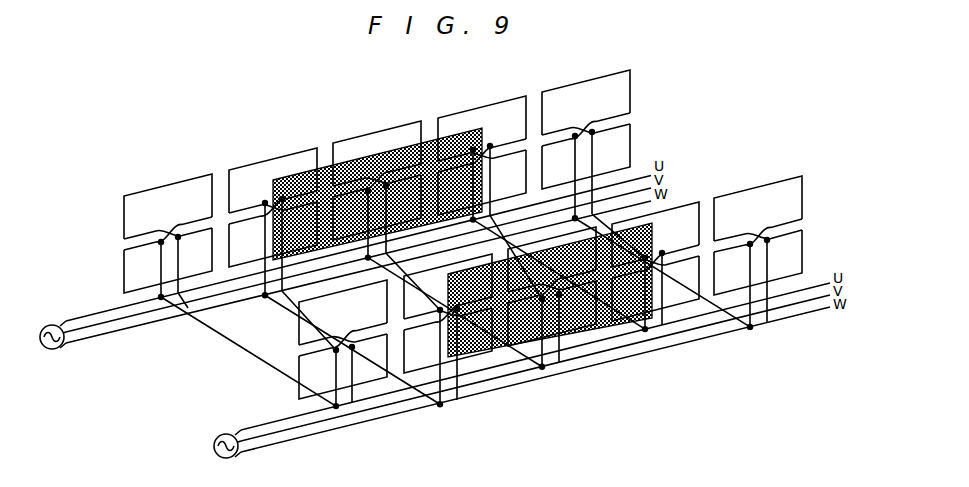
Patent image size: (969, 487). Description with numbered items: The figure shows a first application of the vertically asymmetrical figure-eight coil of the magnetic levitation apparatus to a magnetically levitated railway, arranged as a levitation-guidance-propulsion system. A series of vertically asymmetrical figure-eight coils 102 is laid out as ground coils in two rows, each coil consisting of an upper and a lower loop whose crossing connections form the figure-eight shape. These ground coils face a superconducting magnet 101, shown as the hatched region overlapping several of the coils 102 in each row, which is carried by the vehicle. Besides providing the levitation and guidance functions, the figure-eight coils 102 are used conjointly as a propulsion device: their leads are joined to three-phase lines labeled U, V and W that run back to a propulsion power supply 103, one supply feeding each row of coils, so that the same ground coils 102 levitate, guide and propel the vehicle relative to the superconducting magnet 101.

The superconducting magnet 101 is at (368, 155).
The vertically asymmetrical figure-eight coil 102 is at (170, 183).
The propulsion power supply 103 is at (54, 323).